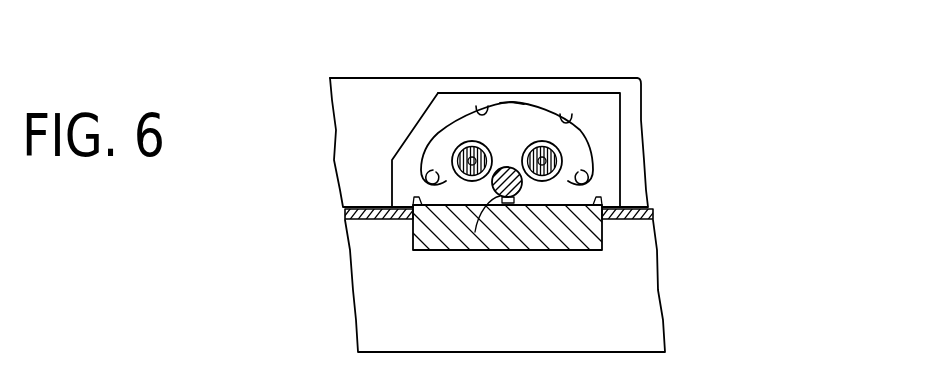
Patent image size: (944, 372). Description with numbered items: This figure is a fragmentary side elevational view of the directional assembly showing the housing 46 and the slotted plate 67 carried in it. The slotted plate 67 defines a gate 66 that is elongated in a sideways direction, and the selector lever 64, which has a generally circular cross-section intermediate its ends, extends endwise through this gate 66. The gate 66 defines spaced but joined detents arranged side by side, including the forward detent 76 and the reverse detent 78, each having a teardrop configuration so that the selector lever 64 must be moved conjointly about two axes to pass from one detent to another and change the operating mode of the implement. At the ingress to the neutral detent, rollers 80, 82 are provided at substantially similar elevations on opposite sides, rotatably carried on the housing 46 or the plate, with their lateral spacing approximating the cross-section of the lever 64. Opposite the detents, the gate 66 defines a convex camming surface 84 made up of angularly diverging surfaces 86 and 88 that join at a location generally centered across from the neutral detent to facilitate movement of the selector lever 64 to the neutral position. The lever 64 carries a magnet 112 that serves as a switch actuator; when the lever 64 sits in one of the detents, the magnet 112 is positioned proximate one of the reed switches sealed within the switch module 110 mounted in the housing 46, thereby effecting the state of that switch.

The housing 46 is at (362, 127).
The slotted plate 67 is at (444, 108).
The gate 66 is at (489, 139).
The convex camming surface 84 is at (514, 101).
The angularly diverging surface 88 is at (481, 110).
The angularly diverging surface 86 is at (572, 113).
The roller 82 is at (452, 157).
The roller 80 is at (560, 160).
The reverse detent 78 is at (433, 171).
The forward detent 76 is at (586, 181).
The selector lever 64 is at (515, 193).
The magnet 112 is at (475, 232).
The switch module 110 is at (583, 243).